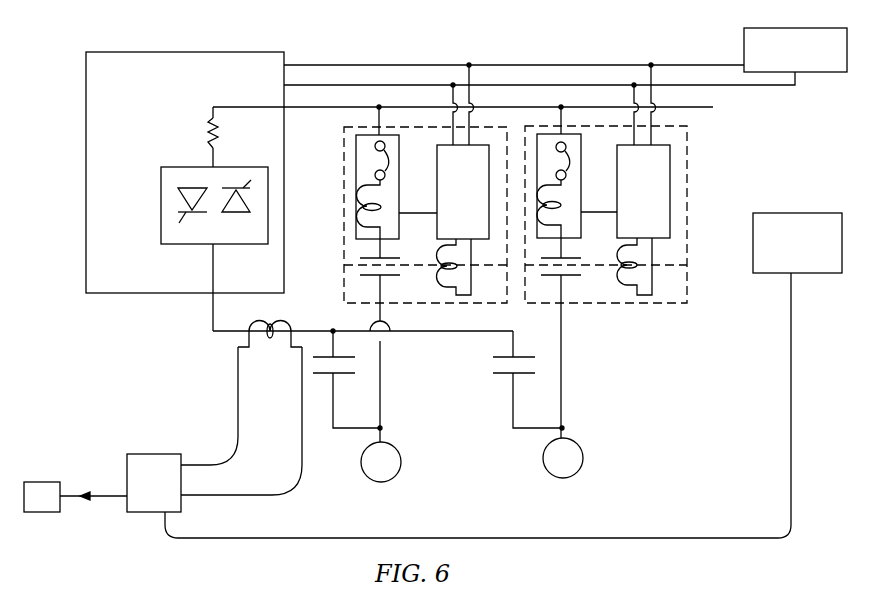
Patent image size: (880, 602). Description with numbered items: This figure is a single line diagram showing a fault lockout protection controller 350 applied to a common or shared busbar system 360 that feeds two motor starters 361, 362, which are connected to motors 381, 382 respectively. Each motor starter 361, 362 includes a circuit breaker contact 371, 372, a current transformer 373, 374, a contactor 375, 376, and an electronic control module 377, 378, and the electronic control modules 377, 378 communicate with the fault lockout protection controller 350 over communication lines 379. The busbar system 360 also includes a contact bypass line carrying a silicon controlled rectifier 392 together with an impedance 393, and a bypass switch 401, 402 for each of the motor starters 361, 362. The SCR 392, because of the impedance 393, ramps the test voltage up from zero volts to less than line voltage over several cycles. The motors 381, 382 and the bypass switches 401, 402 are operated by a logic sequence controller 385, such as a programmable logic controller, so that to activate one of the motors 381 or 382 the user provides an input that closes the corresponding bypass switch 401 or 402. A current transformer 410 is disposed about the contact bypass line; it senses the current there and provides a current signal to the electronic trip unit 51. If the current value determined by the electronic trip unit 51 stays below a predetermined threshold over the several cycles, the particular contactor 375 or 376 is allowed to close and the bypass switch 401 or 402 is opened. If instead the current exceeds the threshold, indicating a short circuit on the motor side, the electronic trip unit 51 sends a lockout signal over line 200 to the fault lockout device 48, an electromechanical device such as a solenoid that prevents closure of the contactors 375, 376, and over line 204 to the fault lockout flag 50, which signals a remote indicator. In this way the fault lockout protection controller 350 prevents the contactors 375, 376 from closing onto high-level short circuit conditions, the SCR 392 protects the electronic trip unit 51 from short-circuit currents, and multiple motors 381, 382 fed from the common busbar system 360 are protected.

The fault lockout protection controller 350 is at (267, 52).
The communication lines 379 is at (318, 64).
The busbar system 360 is at (592, 106).
The logic sequence controller 385 is at (743, 44).
The impedance 393 is at (207, 136).
The silicon controlled rectifier 392 is at (160, 205).
The motor starter 361 is at (415, 304).
The motor starter 362 is at (583, 304).
The circuit breaker contact 371 is at (376, 158).
The circuit breaker contact 372 is at (557, 160).
The current transformer 373 is at (362, 206).
The current transformer 374 is at (545, 208).
The contactor 375 is at (358, 268).
The contactor 376 is at (540, 266).
The electronic control module 377 is at (437, 187).
The electronic control module 378 is at (668, 160).
The fault lockout device 48 is at (806, 212).
The line 200 is at (542, 539).
The current transformer 410 is at (290, 320).
The electronic trip unit 51 is at (164, 453).
The fault lockout flag 50 is at (44, 481).
The line 204 is at (104, 498).
The bypass switch 401 is at (347, 379).
The bypass switch 402 is at (527, 379).
The motor 381 is at (400, 470).
The motor 382 is at (582, 466).